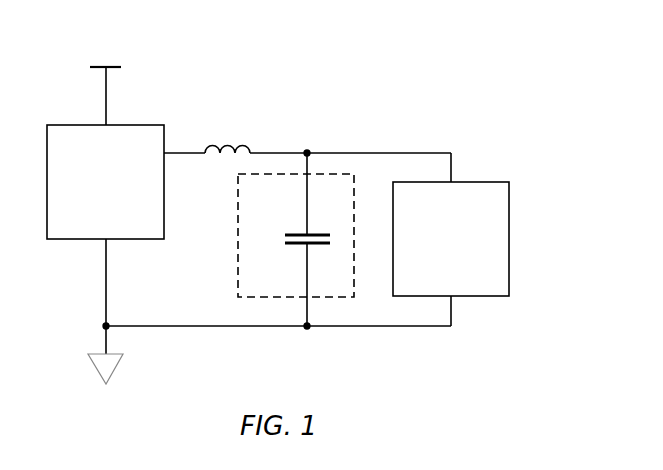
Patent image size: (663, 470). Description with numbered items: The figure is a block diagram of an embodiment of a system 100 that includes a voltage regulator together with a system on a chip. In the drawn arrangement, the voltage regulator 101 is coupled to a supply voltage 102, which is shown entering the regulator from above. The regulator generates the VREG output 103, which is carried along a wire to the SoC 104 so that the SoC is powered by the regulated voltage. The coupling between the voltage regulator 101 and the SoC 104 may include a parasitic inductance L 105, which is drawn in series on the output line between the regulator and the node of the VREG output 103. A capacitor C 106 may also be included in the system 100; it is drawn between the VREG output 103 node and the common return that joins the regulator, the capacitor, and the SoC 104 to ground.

The system 100 is at (470, 78).
The voltage regulator 101 is at (91, 210).
The supply voltage 102 is at (91, 56).
The VREG output 103 is at (279, 152).
The SoC 104 is at (437, 258).
The parasitic inductance L 105 is at (213, 141).
The capacitor C 106 is at (278, 258).